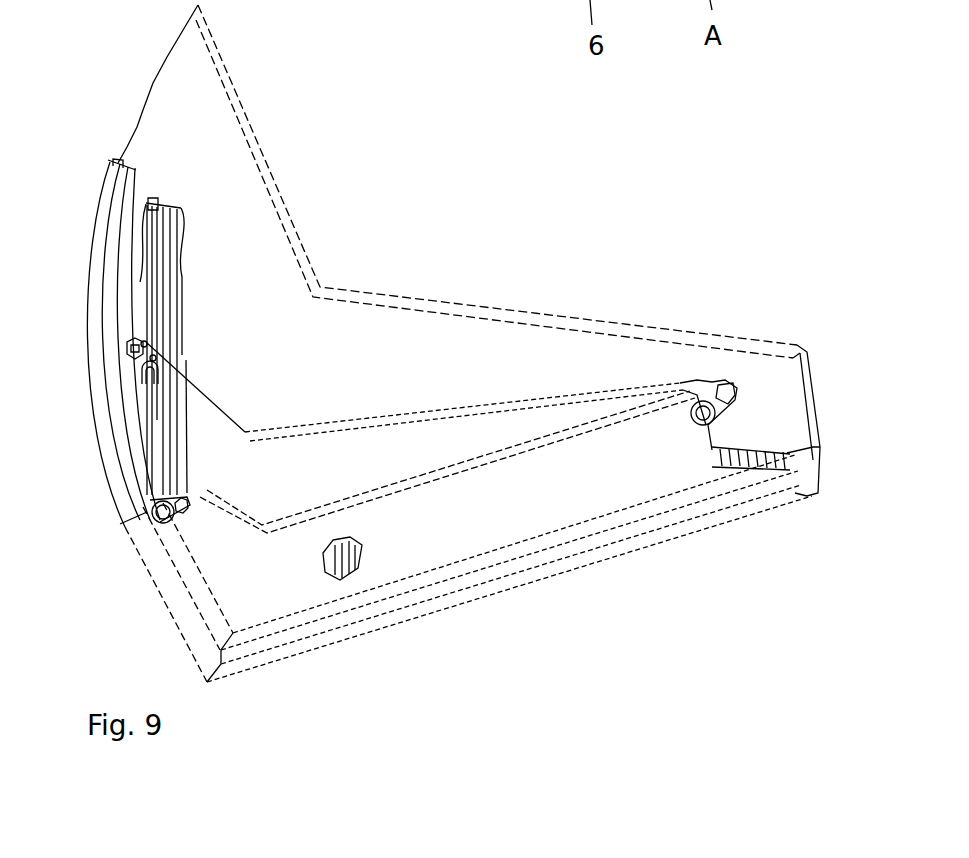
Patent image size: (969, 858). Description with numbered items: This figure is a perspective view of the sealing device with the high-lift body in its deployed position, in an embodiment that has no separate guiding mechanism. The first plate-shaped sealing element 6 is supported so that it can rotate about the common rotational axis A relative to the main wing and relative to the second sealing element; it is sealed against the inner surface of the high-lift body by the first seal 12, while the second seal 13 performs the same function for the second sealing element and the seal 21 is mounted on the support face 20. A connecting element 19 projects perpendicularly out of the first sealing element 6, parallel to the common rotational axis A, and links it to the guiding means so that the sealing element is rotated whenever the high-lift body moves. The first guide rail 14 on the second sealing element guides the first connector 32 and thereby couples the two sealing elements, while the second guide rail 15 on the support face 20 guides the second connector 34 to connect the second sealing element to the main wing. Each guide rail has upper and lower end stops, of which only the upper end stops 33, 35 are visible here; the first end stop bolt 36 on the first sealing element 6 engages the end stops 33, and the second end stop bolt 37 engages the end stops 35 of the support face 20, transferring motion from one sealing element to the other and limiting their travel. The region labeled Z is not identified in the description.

The support face 20 is at (200, 128).
The seal 21 is at (100, 182).
The second seal 13 is at (100, 440).
The first seal 12 is at (130, 560).
The second guide rail 15 is at (167, 227).
The upper end stop 35 is at (152, 200).
The second connector 34 is at (152, 357).
The second end stop bolt 37 is at (143, 343).
The upper end stop 33 is at (138, 370).
The first guide rail 14 is at (157, 377).
The first end stop bolt 36 is at (157, 505).
The first connector 32 is at (180, 500).
The connecting element 19 is at (350, 577).
The first plate-shaped sealing element 6 is at (647, 463).
The common rotational axis A is at (703, 420).
The panel zone Z is at (399, 471).